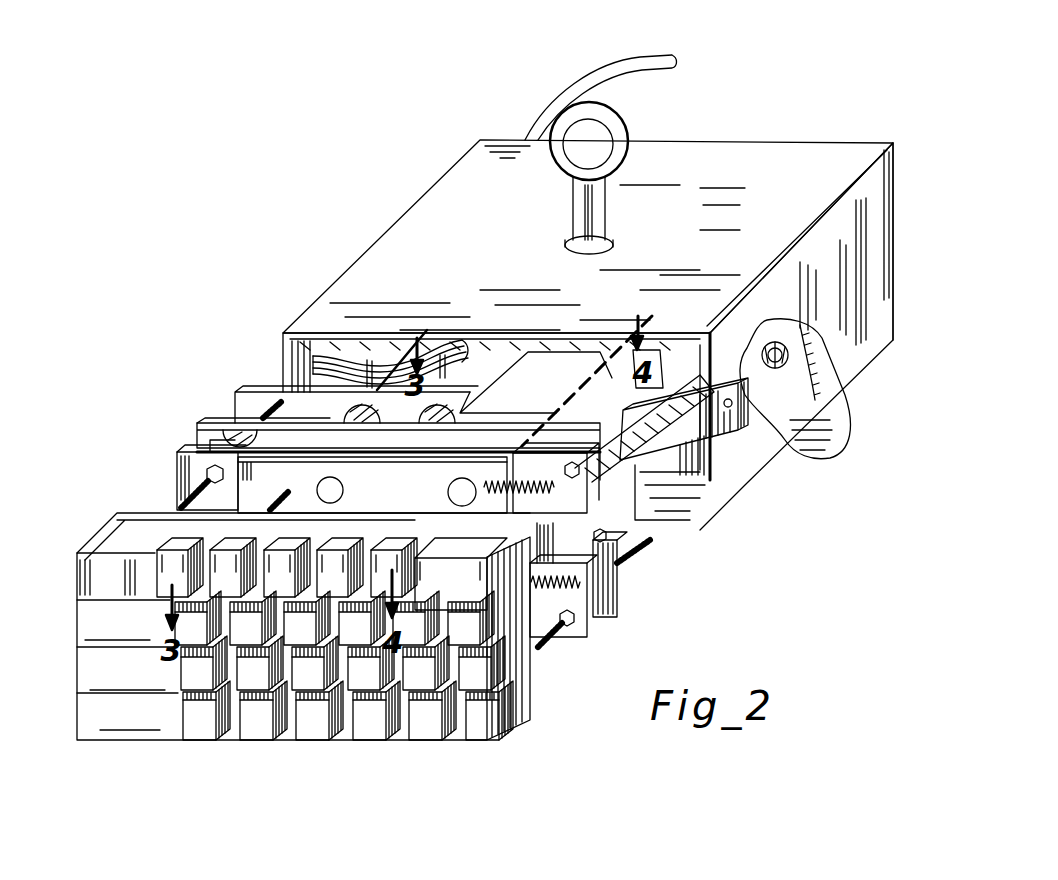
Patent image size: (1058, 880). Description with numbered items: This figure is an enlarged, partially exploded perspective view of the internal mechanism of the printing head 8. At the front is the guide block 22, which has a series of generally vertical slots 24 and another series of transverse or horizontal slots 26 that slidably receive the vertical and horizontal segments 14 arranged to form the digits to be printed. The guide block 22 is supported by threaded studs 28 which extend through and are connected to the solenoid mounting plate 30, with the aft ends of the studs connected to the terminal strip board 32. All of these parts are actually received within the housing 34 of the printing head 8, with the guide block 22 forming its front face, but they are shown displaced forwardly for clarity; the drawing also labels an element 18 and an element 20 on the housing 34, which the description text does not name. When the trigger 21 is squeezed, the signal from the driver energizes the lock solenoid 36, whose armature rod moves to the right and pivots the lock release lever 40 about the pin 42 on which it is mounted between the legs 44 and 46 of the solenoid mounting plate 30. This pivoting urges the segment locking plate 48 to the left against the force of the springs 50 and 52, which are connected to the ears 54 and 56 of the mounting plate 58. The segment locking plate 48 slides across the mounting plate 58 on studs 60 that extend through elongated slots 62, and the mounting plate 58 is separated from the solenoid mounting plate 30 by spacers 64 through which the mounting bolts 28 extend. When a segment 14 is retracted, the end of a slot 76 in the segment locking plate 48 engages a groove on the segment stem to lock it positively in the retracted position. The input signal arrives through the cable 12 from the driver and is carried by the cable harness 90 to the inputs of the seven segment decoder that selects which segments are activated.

The printing head 8 is at (427, 163).
The cable 12 is at (642, 58).
The segments 14 is at (265, 592).
The eyebolt 18 is at (615, 128).
The housing 20 is at (857, 404).
The trigger 21 is at (760, 342).
The guide block 22 is at (500, 716).
The vertical slots 24 is at (120, 525).
The horizontal slots 26 is at (505, 630).
The threaded studs 28 is at (178, 502).
The solenoid mounting plate 30 is at (245, 408).
The terminal strip board 32 is at (257, 390).
The housing 34 is at (884, 308).
The lock solenoid 36 is at (674, 362).
The lock release lever 40 is at (703, 442).
The pin 42 is at (627, 548).
The leg 44 is at (665, 480).
The leg 46 is at (603, 617).
The segment locking plate 48 is at (240, 440).
The spring 50 is at (526, 456).
The spring 52 is at (533, 588).
The ear 54 is at (650, 518).
The ear 56 is at (590, 640).
The mounting plate 58 is at (177, 460).
The studs 60 is at (317, 493).
The elongated slots 62 is at (318, 480).
The spacers 64 is at (230, 440).
The slot 76 is at (268, 506).
The cable harness 90 is at (362, 362).